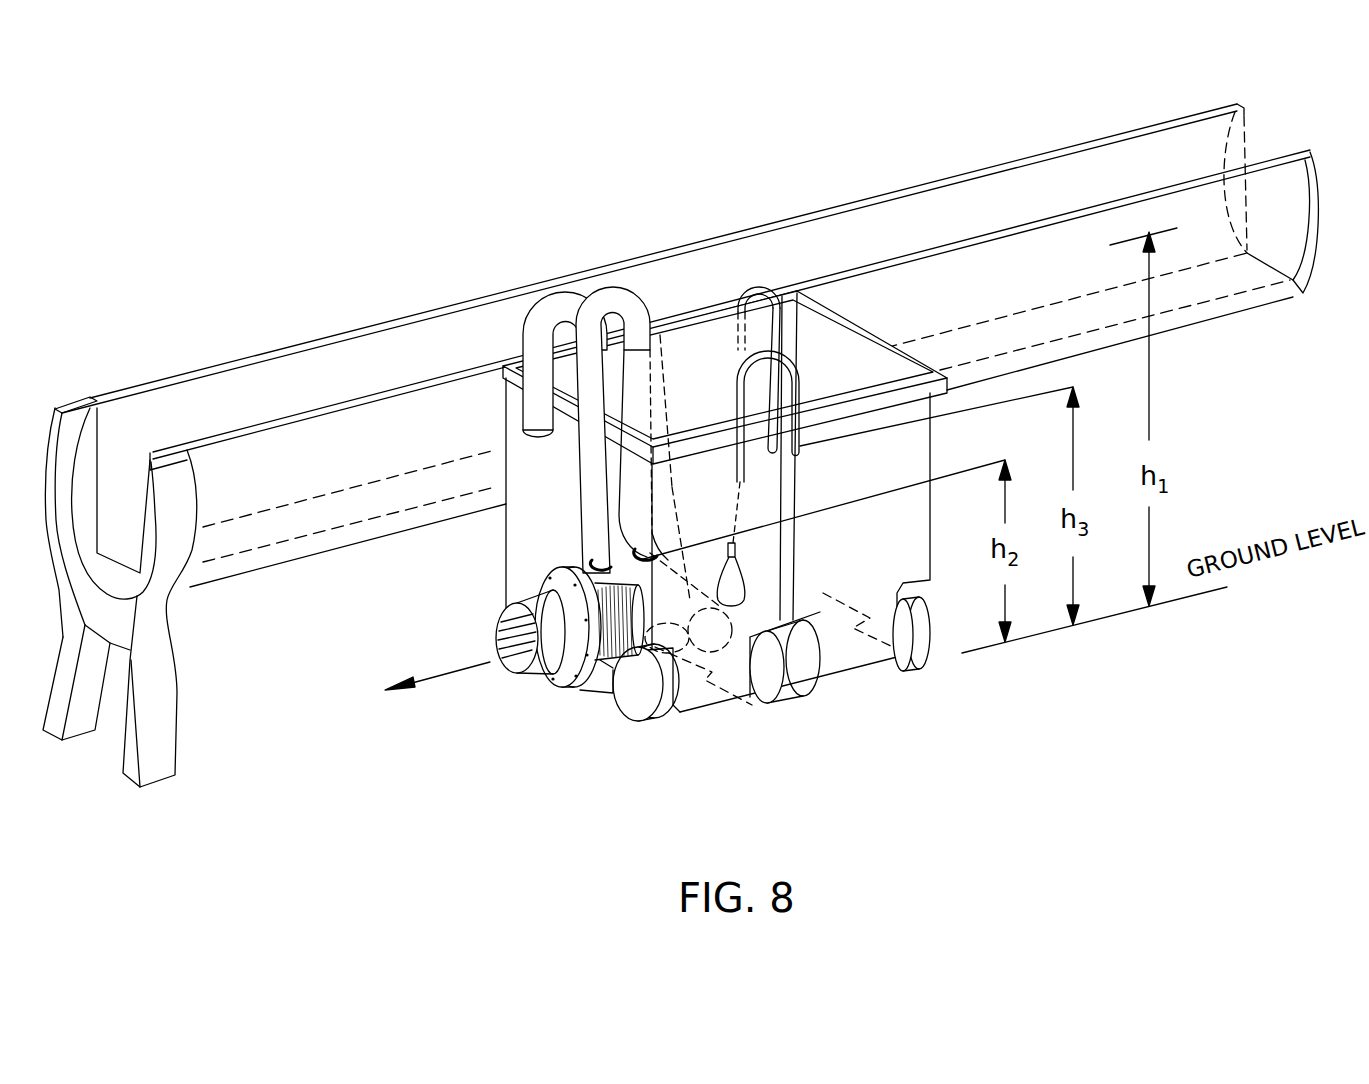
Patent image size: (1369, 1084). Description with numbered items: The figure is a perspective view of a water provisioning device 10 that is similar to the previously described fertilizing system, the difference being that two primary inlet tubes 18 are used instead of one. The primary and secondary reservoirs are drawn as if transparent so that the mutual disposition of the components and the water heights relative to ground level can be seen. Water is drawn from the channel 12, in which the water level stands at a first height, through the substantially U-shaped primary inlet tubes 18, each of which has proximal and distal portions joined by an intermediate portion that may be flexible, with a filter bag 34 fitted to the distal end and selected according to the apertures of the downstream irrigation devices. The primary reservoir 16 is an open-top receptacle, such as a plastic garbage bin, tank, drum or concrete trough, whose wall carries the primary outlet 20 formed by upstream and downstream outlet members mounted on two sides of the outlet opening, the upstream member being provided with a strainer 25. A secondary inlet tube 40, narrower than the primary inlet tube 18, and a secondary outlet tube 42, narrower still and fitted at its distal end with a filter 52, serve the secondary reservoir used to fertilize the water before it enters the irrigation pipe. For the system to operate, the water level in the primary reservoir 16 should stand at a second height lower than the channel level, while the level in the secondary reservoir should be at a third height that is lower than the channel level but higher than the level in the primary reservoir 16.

The water provisioning device 10 is at (1015, 723).
The channel 12 is at (323, 372).
The primary reservoir 16 is at (535, 540).
The primary inlet tube 18 is at (600, 303).
The primary outlet 20 is at (553, 675).
The strainer 25 is at (613, 663).
The filter bag 34 is at (710, 635).
The secondary inlet tube 40 is at (760, 290).
The secondary outlet tube 42 is at (757, 352).
The filter 52 is at (833, 660).